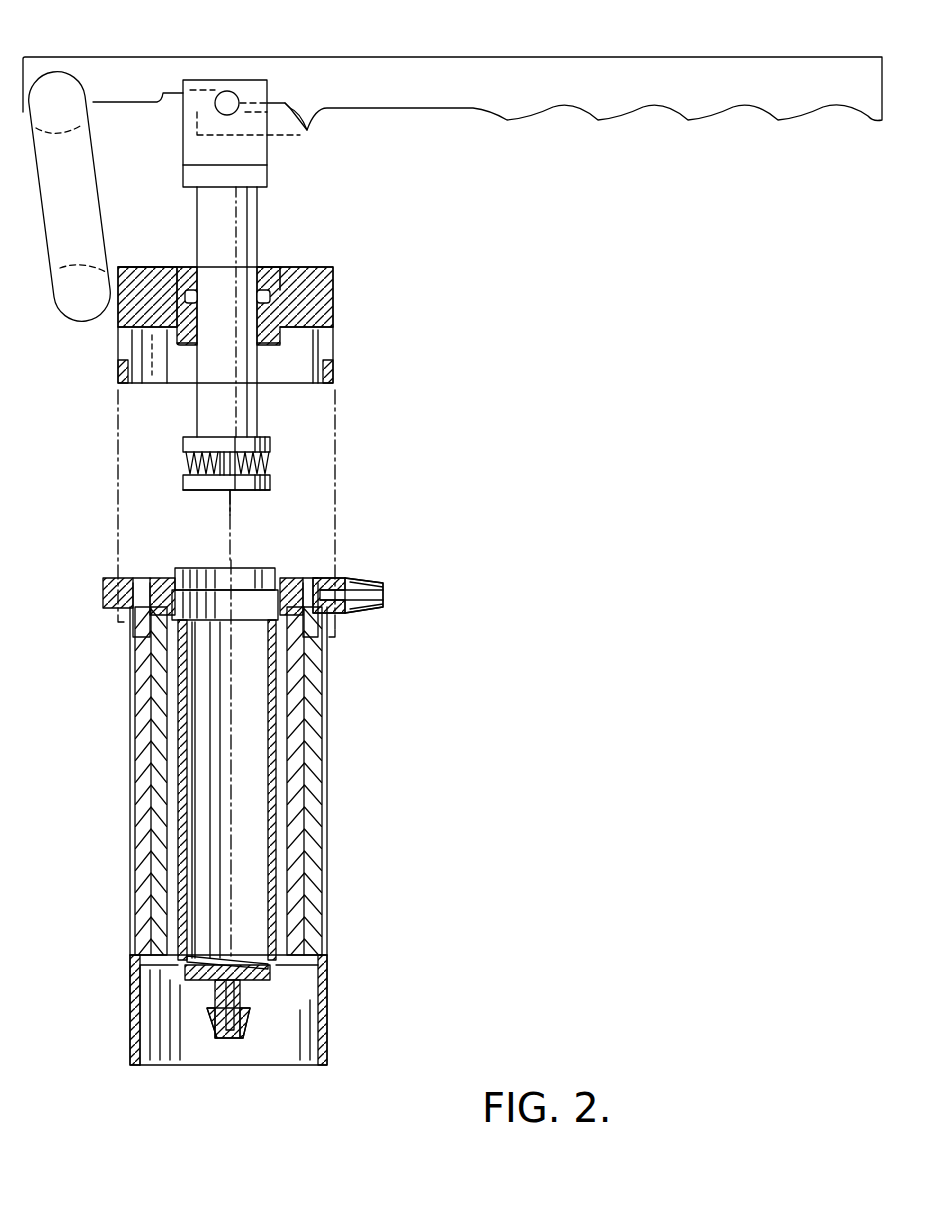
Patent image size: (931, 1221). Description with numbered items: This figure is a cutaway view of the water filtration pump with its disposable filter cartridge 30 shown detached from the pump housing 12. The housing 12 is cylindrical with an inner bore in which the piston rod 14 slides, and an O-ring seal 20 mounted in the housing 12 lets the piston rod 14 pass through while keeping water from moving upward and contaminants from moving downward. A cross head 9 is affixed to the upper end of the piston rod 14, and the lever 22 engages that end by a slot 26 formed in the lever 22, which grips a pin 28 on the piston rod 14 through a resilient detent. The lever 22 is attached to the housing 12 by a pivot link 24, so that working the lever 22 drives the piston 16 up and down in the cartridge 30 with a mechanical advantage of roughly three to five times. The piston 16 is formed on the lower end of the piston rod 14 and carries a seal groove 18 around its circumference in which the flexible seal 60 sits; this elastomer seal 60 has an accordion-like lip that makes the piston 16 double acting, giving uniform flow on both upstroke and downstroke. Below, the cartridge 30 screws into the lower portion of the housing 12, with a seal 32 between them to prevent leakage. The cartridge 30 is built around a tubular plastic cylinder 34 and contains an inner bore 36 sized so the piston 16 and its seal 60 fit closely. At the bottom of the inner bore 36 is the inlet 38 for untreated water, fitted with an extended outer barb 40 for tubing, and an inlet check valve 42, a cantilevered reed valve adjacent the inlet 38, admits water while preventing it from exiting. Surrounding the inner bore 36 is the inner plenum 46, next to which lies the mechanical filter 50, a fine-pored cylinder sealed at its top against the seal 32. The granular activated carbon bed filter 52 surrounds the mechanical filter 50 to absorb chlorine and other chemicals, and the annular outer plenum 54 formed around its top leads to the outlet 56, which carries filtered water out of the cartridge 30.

The lever 22 is at (652, 63).
The pivot link 24 is at (75, 214).
The cross head 9 is at (200, 150).
The pin 28 is at (225, 105).
The slot 26 is at (307, 128).
The piston rod 14 is at (257, 222).
The pump housing 12 is at (349, 300).
The O-ring seal 20 is at (270, 268).
The seal groove 18 is at (270, 460).
The flexible seal 60 is at (183, 460).
The piston 16 is at (258, 490).
The cartridge 30 is at (332, 768).
The seal 32 is at (298, 577).
The inner plenum 46 is at (172, 673).
The inner bore 36 is at (230, 748).
The mechanical filter 50 is at (297, 838).
The granular activated carbon bed filter 52 is at (312, 870).
The tubular plastic cylinder 34 is at (130, 1012).
The inlet check valve 42 is at (235, 962).
The inlet 38 is at (245, 1000).
The outer barb 40 is at (215, 1020).
The outer plenum 54 is at (305, 574).
The outlet 56 is at (383, 597).